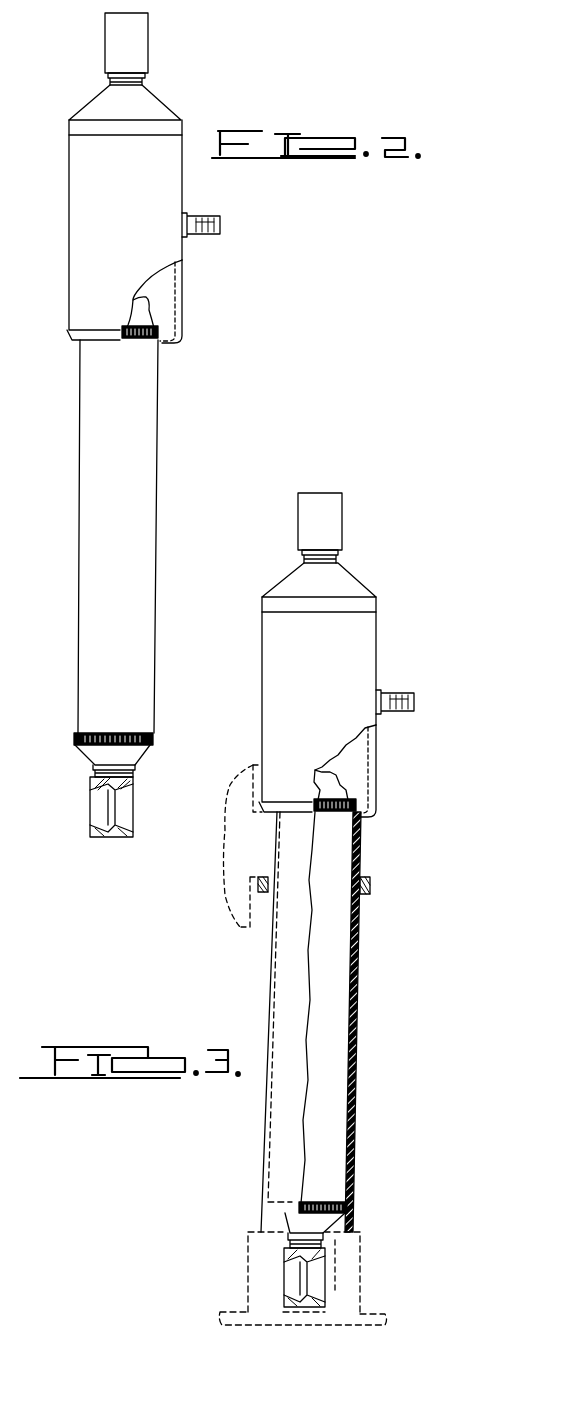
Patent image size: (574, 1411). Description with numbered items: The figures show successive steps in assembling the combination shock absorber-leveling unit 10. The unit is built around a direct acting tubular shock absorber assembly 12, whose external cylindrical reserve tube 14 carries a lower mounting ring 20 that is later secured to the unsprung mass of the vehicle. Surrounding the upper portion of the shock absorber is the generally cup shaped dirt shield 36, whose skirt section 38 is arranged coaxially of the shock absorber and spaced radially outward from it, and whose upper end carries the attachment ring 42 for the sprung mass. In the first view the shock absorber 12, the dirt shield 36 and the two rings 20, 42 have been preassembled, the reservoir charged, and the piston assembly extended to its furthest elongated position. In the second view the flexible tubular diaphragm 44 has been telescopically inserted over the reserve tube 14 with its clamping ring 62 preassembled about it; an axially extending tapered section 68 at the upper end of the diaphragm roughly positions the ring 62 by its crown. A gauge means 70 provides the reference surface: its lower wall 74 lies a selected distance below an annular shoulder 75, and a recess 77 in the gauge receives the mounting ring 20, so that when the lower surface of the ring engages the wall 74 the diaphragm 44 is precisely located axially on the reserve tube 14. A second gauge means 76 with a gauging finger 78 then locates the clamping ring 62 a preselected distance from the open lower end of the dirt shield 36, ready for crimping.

In FIG. 2, the shock absorber-leveling unit 10 is at (177, 375).
In FIG. 2, the shock absorber assembly 12 is at (170, 560).
In FIG. 2, the reserve tube 14 is at (157, 473).
In FIG. 2, the mounting ring 20 is at (90, 790).
In FIG. 2, the dirt shield 36 is at (222, 180).
In FIG. 3, the dirt shield 36 is at (386, 663).
In FIG. 2, the skirt section 38 is at (67, 200).
In FIG. 3, the skirt section 38 is at (260, 672).
In FIG. 2, the upper attachment ring 42 is at (148, 48).
In FIG. 3, the upper attachment ring 42 is at (342, 508).
In FIG. 3, the diaphragm member 44 is at (352, 1078).
In FIG. 3, the clamping ring 62 is at (370, 888).
In FIG. 3, the tapered section 68 is at (360, 848).
In FIG. 3, the gauge means 70 is at (243, 1262).
In FIG. 3, the lower wall 74 is at (320, 1290).
In FIG. 3, the shoulder 75 is at (346, 1230).
In FIG. 3, the gauge means 76 is at (245, 890).
In FIG. 3, the base recess 77 is at (330, 1252).
In FIG. 3, the gauging finger 78 is at (275, 846).